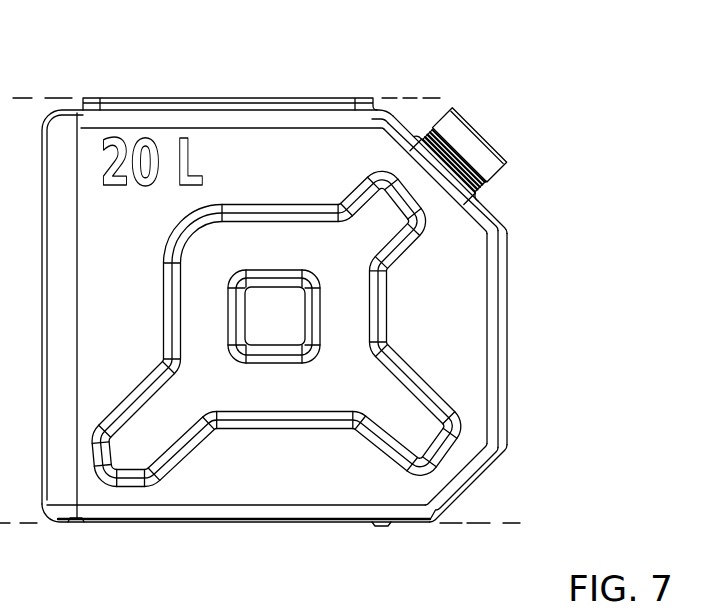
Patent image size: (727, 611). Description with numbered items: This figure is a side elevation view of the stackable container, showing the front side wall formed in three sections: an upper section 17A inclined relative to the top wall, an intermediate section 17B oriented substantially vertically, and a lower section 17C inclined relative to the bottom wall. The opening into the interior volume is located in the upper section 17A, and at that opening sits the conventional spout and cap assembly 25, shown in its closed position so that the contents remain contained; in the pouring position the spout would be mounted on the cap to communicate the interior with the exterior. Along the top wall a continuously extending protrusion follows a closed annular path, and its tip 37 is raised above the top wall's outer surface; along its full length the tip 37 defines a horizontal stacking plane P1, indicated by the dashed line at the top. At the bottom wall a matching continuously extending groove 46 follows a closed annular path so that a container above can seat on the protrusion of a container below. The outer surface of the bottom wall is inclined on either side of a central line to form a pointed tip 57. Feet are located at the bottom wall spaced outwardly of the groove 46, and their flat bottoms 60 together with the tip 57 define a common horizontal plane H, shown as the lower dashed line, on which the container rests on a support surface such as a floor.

The tip of the protrusion 37 is at (233, 95).
The horizontal stacking plane P1 is at (432, 98).
The spout and cap assembly 25 is at (518, 157).
The upper section 17A is at (492, 205).
The intermediate section 17B is at (508, 303).
The lower section 17C is at (488, 474).
The groove 46 is at (84, 529).
The tip of the bottom wall 57 is at (238, 527).
The bottoms of the feet 60 is at (380, 526).
The horizontal plane H is at (478, 525).